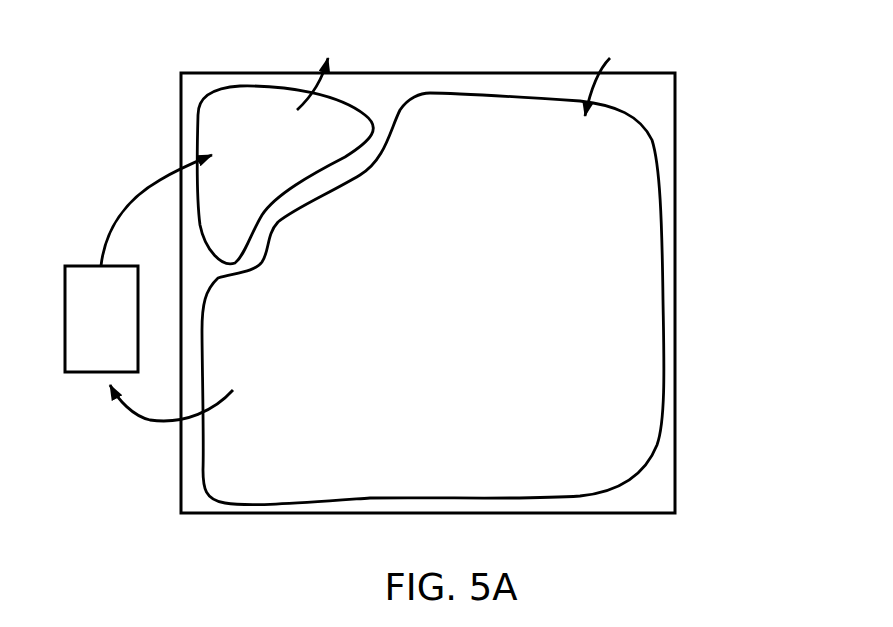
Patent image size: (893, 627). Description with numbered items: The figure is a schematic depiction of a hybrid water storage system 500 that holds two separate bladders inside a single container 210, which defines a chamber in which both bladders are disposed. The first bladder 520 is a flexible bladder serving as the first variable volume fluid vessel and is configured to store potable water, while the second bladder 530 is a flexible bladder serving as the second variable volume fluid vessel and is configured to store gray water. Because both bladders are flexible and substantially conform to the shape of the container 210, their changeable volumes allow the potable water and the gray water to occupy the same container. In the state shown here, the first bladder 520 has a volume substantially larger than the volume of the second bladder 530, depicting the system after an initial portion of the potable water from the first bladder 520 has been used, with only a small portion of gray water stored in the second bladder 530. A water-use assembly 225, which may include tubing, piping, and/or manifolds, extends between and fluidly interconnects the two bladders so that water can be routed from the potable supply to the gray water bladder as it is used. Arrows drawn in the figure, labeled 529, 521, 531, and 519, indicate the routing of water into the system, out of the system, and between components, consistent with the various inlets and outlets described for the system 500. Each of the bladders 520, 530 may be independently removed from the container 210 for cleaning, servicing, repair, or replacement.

The hybrid water storage system 500 is at (106, 55).
The container 210 is at (675, 407).
The first bladder 520 is at (664, 287).
The second bladder 530 is at (197, 111).
The water-use assembly 225 is at (101, 319).
The inlet flow 529 is at (118, 213).
The return flow 521 is at (143, 413).
The outlet flow 531 is at (320, 83).
The inlet flow 519 is at (588, 78).